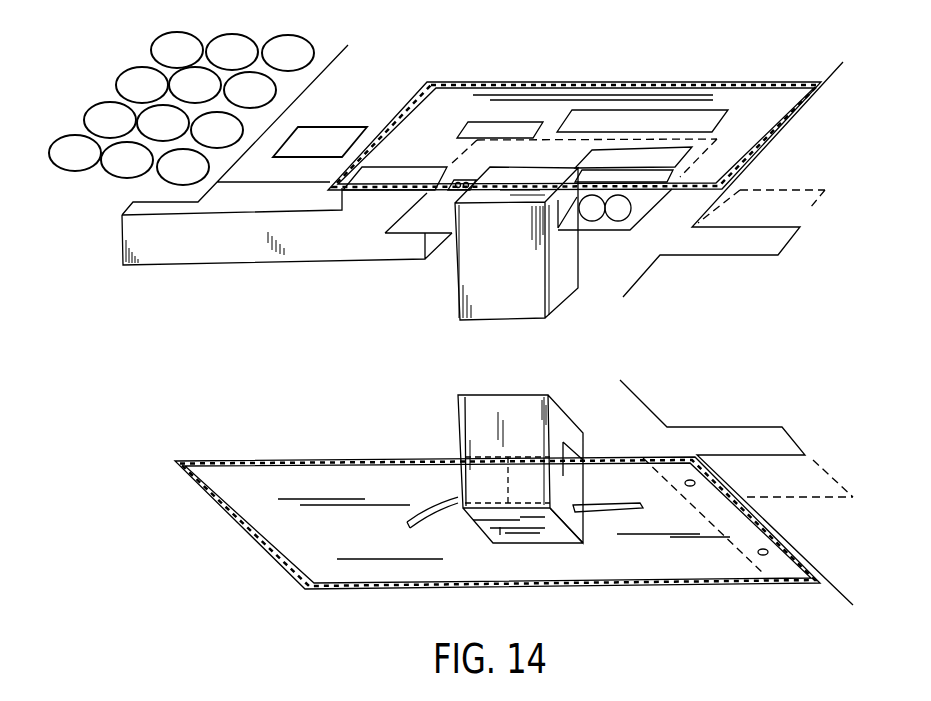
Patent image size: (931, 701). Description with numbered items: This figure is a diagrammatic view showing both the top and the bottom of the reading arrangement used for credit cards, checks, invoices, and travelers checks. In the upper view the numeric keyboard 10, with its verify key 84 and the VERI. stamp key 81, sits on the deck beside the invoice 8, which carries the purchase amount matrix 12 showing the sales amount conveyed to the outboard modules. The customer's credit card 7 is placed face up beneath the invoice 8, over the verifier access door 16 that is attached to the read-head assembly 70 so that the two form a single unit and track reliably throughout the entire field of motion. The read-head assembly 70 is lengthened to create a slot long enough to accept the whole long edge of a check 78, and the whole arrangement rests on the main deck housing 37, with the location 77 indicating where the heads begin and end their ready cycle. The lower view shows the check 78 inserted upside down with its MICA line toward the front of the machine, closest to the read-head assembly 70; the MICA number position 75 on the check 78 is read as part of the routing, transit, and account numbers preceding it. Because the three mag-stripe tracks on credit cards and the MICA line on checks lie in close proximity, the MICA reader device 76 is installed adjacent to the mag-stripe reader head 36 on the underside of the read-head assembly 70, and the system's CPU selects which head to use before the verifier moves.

The numeric keyboard 10 is at (290, 87).
The verify key 84 is at (300, 42).
The VERI. stamp 81 is at (337, 127).
The verifier access door 16 is at (303, 250).
The invoice 8 is at (453, 100).
The purchase amount matrix 12 is at (395, 167).
The credit card 7 is at (634, 218).
The read-head assembly 70 is at (473, 297).
The main deck housing 37 is at (710, 278).
The ready-cycle location 77 is at (818, 206).
The check 78 is at (280, 477).
The MICA number position 75 is at (617, 470).
The mag-stripe reader head 36 is at (514, 540).
The MICA reader device 76 is at (558, 547).